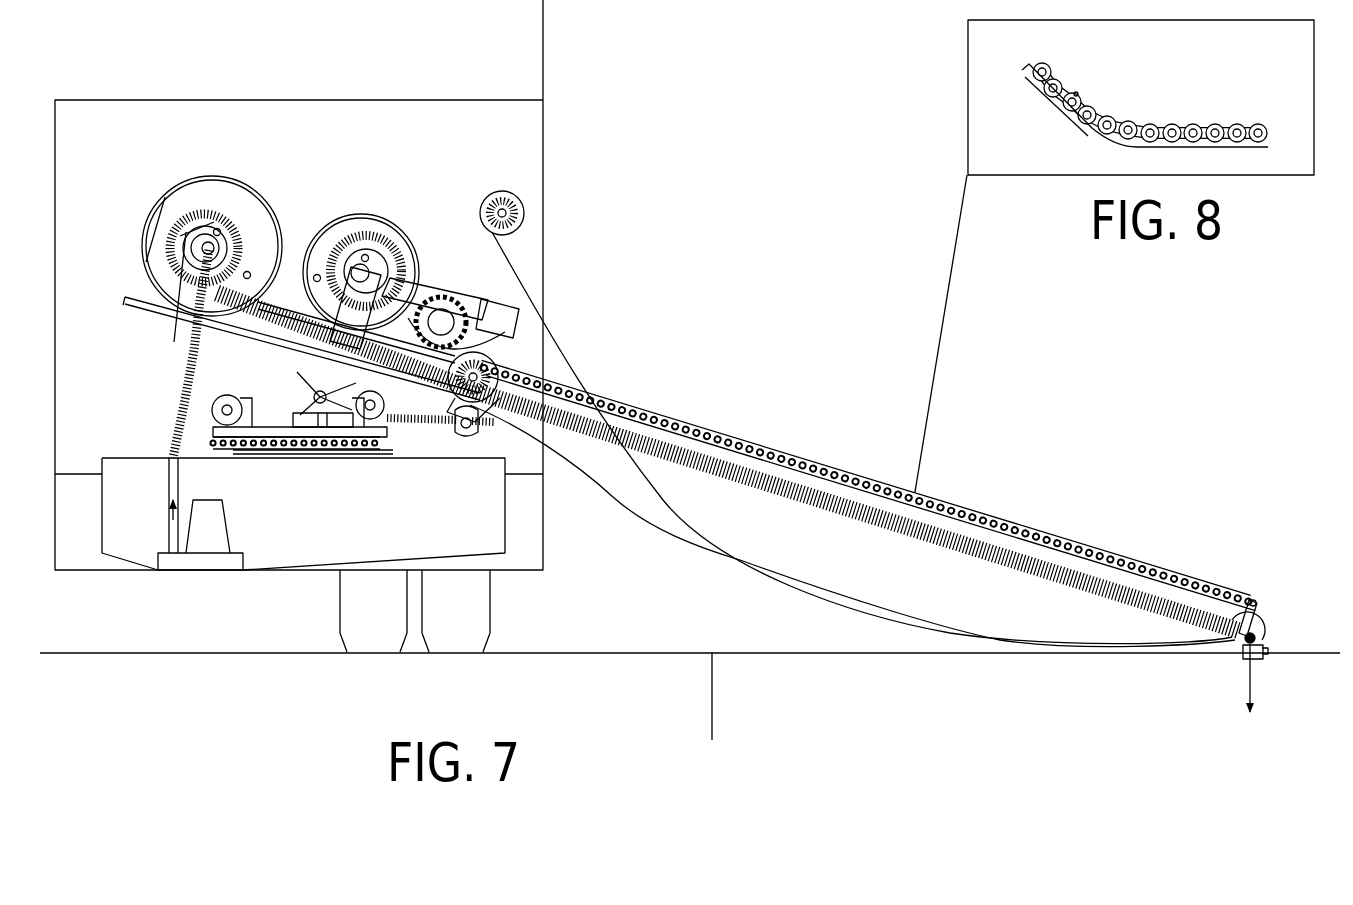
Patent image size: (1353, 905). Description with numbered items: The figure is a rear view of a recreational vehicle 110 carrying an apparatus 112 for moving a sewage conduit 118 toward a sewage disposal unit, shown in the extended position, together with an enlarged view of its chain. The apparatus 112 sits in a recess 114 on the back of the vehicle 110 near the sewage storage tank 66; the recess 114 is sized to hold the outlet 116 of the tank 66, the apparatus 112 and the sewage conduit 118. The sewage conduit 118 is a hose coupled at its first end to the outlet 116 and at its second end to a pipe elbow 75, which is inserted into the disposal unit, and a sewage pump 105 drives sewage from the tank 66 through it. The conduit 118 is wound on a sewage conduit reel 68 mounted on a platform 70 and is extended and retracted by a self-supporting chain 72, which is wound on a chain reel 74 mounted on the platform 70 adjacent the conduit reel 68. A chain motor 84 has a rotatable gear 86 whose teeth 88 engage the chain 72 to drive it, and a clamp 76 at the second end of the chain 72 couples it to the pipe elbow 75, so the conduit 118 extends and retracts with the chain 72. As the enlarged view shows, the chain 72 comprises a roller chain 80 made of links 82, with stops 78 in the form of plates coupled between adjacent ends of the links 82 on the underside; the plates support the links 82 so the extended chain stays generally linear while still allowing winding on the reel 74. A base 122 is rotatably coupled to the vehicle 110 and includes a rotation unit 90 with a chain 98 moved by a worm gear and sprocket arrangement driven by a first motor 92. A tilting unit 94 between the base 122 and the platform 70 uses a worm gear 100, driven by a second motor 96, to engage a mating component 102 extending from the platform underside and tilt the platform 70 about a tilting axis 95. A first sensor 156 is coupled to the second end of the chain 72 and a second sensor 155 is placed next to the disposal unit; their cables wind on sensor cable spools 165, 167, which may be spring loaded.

In FIG. 7, the recreational vehicle 110 is at (261, 76).
In FIG. 7, the recess 114 is at (510, 135).
In FIG. 7, the apparatus 112 is at (590, 235).
In FIG. 7, the sewage storage tank 66 is at (343, 542).
In FIG. 7, the sewage pump 105 is at (232, 505).
In FIG. 7, the sewage conduit reel 68 is at (218, 192).
In FIG. 7, the outlet 116 is at (168, 458).
In FIG. 7, the chain reel 74 is at (370, 240).
In FIG. 7, the rotatable gear 86 is at (440, 297).
In FIG. 7, the chain motor 84 is at (500, 313).
In FIG. 7, the teeth 88 is at (483, 343).
In FIG. 7, the sensor cable spool 165 is at (522, 204).
In FIG. 7, the sensor cable spool 167 is at (495, 365).
In FIG. 7, the platform 70 is at (125, 306).
In FIG. 7, the sewage conduit 118 is at (888, 532).
In FIG. 7, the self-supporting chain 72 is at (1040, 523).
In FIG. 7, the rotation unit 90 is at (260, 420).
In FIG. 7, the first motor 92 is at (213, 400).
In FIG. 7, the tilting unit 94 is at (298, 410).
In FIG. 7, the tilting axis 95 is at (316, 390).
In FIG. 7, the chain 98 is at (212, 441).
In FIG. 7, the second motor 96 is at (362, 449).
In FIG. 7, the base 122 is at (395, 441).
In FIG. 7, the mating component 102 is at (468, 430).
In FIG. 7, the worm gear 100 is at (475, 420).
In FIG. 7, the clamp 76 is at (1262, 607).
In FIG. 7, the pipe elbow 75 is at (1262, 645).
In FIG. 7, the second sensor 155 is at (1225, 636).
In FIG. 7, the first sensor 156 is at (1240, 650).
In FIG. 8, the links 82 is at (1182, 124).
In FIG. 8, the stops 78 is at (1035, 92).
In FIG. 8, the roller chain 80 is at (1078, 92).